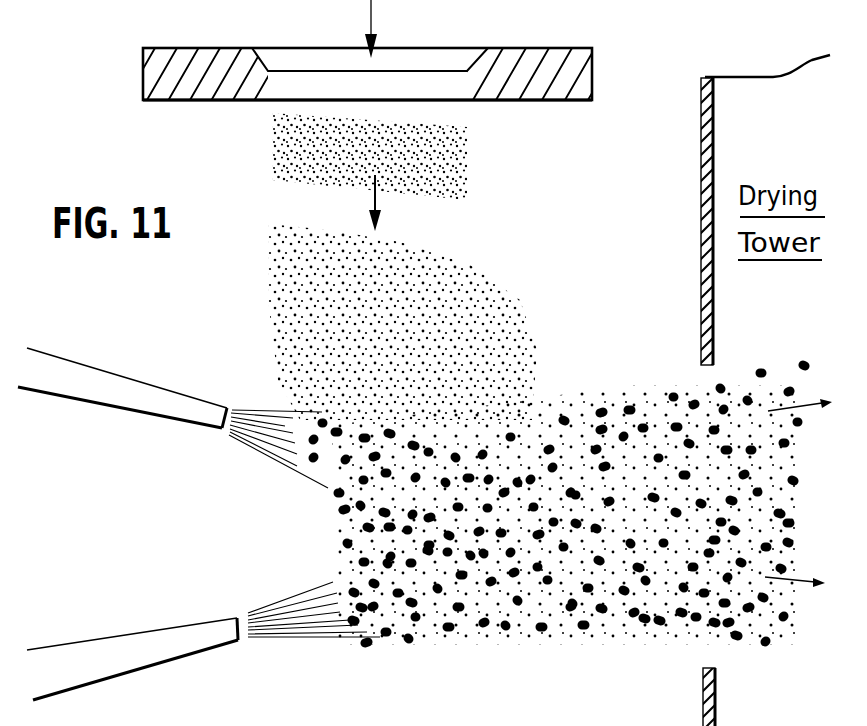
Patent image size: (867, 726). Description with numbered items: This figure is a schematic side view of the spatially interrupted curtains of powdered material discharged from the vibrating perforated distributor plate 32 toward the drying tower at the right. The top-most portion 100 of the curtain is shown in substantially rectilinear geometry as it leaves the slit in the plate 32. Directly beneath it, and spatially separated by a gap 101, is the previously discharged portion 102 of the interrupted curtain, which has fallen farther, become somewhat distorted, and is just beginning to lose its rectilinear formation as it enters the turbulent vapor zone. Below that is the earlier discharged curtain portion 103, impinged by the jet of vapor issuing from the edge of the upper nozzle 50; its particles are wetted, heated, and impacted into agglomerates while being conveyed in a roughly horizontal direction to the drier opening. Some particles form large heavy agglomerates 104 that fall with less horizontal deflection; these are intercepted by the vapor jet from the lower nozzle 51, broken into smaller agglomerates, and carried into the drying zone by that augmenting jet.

The orifice plate 32 is at (565, 42).
The upper spray nozzle 50 is at (128, 362).
The lower spray nozzle 51 is at (136, 622).
The top-most portion of the curtain 100 is at (492, 158).
The spatial separation 101 is at (485, 228).
The previously discharged portion of the interrupted curtain 102 is at (523, 311).
The curtain portion impinged by the jet of vapor 103 is at (278, 475).
The large heavy agglomerates 104 is at (325, 648).